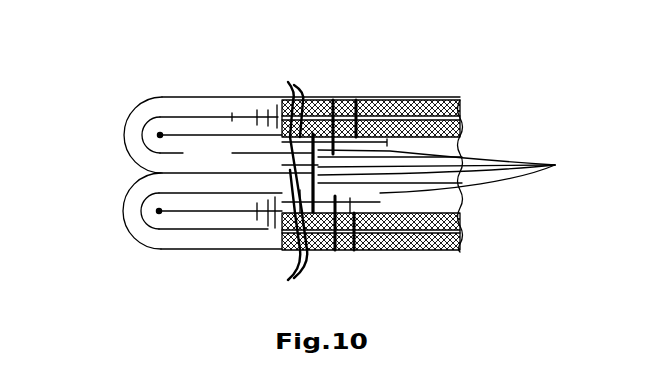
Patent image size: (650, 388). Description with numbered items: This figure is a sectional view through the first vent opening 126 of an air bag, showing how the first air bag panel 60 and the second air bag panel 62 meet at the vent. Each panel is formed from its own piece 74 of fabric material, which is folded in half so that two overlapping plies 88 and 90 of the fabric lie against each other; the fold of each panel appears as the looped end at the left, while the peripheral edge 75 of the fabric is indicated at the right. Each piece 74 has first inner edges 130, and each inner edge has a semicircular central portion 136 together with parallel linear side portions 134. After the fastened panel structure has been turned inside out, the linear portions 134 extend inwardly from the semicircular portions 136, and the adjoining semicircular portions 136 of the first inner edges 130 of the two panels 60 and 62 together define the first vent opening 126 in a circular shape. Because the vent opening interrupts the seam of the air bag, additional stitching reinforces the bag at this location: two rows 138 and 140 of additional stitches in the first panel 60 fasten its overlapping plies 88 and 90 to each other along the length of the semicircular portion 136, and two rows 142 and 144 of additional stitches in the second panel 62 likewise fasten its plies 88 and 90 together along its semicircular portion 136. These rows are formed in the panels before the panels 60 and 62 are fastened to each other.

The first air bag panel 60 is at (118, 134).
The second air bag panel 62 is at (119, 214).
The piece of fabric material 74 is at (478, 114).
The peripheral edge 75 is at (452, 171).
The ply of fabric material 88 is at (456, 101).
The ply of fabric material 90 is at (463, 143).
The first vent opening 126 is at (226, 165).
The first inner edge 130 is at (150, 102).
The linear side portion 134 is at (285, 180).
The semicircular central portion 136 is at (278, 115).
The row of additional stitches 138 is at (333, 100).
The row of additional stitches 140 is at (356, 100).
The row of additional stitches 142 is at (354, 250).
The row of additional stitches 144 is at (335, 250).